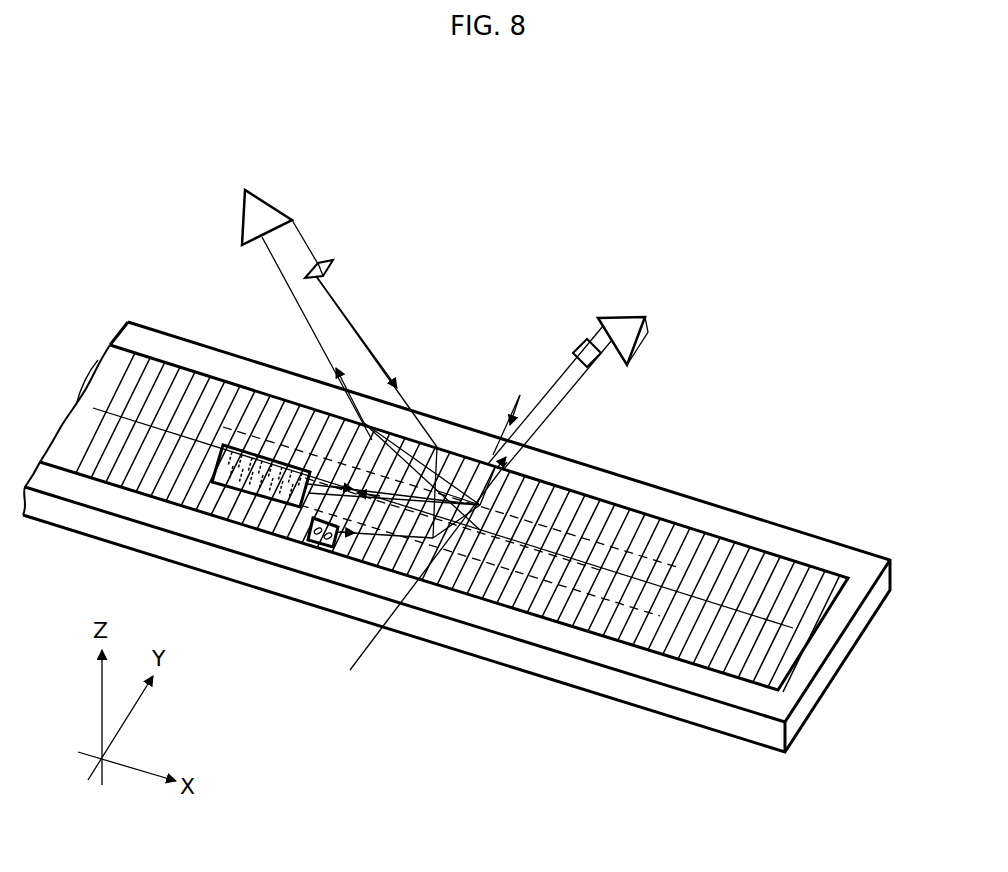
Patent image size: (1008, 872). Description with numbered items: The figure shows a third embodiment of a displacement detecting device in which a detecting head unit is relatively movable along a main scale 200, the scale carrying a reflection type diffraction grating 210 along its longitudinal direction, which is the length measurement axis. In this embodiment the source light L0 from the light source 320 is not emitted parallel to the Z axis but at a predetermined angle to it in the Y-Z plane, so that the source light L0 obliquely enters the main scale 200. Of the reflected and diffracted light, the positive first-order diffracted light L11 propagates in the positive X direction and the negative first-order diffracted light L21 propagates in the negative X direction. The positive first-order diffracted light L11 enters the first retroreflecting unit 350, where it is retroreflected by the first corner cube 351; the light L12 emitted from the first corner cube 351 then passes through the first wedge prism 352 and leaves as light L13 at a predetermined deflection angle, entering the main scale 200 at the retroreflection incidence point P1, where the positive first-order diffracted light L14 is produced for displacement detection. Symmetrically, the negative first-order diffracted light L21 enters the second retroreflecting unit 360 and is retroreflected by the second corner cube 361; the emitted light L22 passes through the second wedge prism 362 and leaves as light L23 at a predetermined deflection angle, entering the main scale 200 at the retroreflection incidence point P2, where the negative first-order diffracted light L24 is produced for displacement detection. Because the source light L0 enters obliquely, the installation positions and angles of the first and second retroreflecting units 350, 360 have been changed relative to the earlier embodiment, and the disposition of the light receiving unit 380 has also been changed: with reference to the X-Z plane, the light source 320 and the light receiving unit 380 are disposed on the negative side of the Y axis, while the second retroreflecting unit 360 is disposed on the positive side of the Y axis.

The main scale 200 is at (794, 545).
The reflection type diffraction grating 210 is at (725, 553).
The light source 320 is at (316, 543).
The first retroreflecting unit 350 is at (629, 365).
The first corner cube 351 is at (632, 317).
The first wedge prism 352 is at (573, 347).
The second retroreflecting unit 360 is at (274, 287).
The second corner cube 361 is at (240, 215).
The second wedge prism 362 is at (328, 262).
The light receiving unit 380 is at (245, 503).
The source light L0 is at (317, 547).
The positive first-order diffracted light L11 is at (556, 416).
The light emitted from the first corner cube L12 is at (605, 350).
The light emitted from the first wedge prism L13 is at (550, 390).
The positive first-order diffracted light L14 is at (337, 478).
The negative first-order diffracted light L21 is at (293, 298).
The light emitted from the second corner cube L22 is at (302, 246).
The light emitted from the second wedge prism L23 is at (347, 320).
The negative first-order diffracted light L24 is at (433, 540).
The retroreflection incidence point P1 is at (435, 488).
The retroreflection incidence point P2 is at (482, 507).